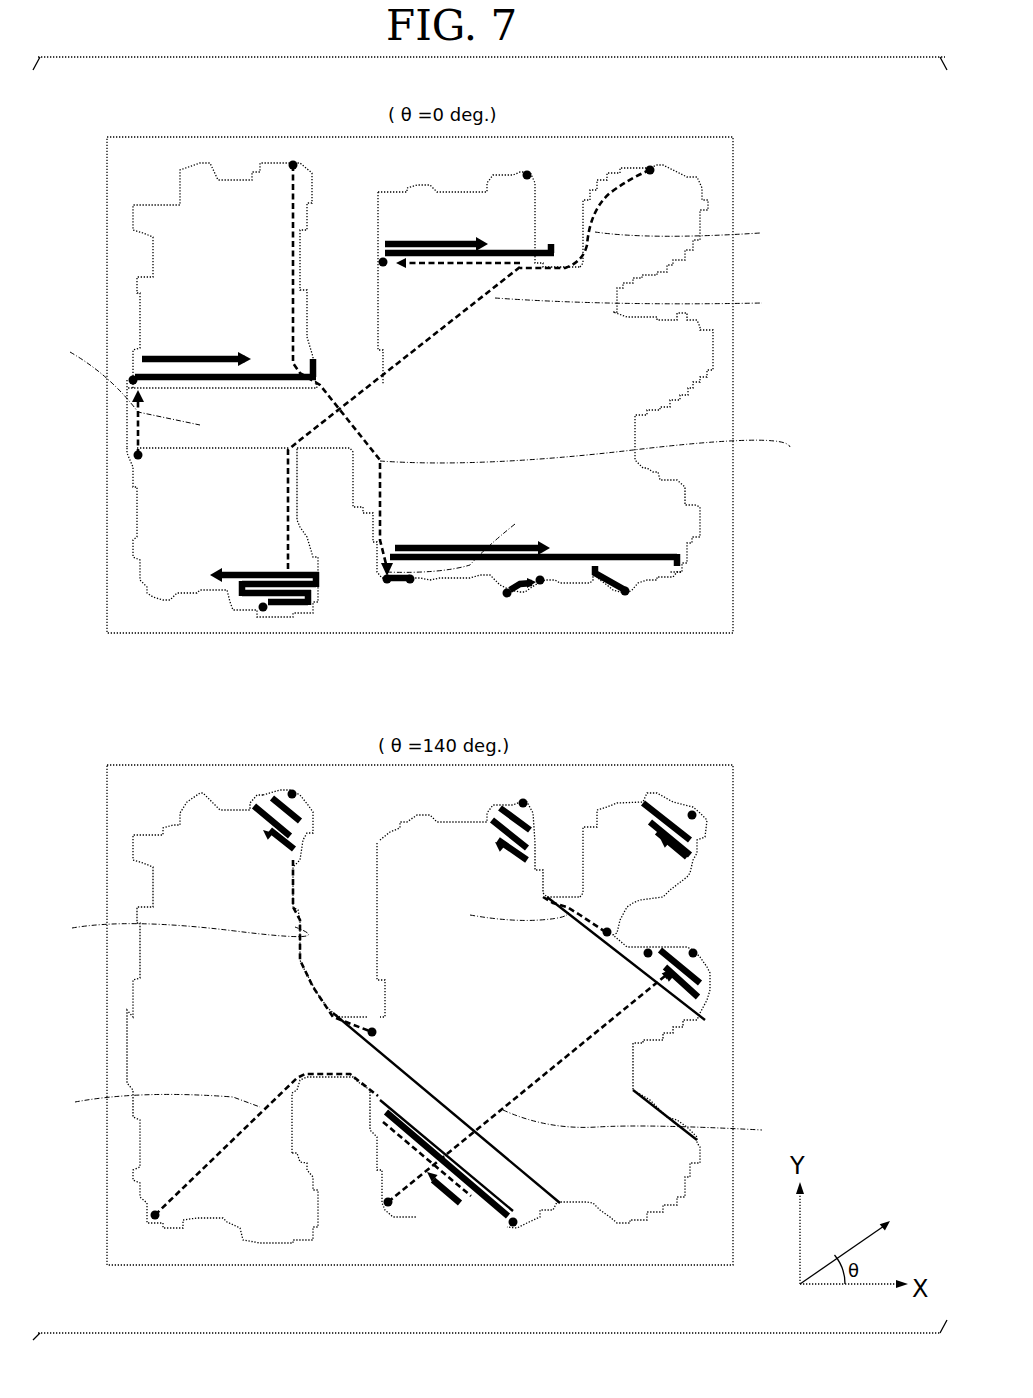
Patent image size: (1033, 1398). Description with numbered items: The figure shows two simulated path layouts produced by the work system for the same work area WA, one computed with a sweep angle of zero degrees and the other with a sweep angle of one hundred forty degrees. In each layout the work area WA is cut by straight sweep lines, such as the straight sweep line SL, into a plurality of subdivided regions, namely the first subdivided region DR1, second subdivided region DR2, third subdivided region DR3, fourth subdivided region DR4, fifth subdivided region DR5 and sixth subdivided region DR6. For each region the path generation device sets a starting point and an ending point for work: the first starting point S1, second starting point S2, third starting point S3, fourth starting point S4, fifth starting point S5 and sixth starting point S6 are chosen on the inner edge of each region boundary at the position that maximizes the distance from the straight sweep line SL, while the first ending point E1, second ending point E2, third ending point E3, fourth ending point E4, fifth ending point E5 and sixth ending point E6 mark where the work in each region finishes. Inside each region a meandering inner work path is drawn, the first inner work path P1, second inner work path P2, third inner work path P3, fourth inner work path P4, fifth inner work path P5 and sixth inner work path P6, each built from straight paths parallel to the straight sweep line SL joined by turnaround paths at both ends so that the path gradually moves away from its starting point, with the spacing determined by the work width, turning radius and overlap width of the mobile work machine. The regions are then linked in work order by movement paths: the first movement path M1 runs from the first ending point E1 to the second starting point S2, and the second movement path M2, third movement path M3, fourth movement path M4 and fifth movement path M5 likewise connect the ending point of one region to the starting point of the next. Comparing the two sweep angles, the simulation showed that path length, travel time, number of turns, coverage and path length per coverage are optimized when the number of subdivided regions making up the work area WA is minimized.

The work area WA is at (710, 185).
The first subdivided region DR1 is at (489, 646).
The second subdivided region DR2 is at (478, 594).
The third subdivided region DR3 is at (247, 845).
The fourth subdivided region DR4 is at (430, 1230).
The fifth subdivided region DR5 is at (405, 583).
The sixth subdivided region DR6 is at (530, 592).
The straight sweep line SL is at (420, 270).
The first movement path M1 is at (615, 574).
The second movement path M2 is at (418, 613).
The third movement path M3 is at (149, 719).
The fourth movement path M4 is at (604, 790).
The fifth movement path M5 is at (462, 533).
The first inner work path P1 is at (460, 546).
The second inner work path P2 is at (385, 250).
The third inner work path P3 is at (230, 575).
The fourth inner work path P4 is at (185, 358).
The fifth inner work path P5 is at (393, 575).
The sixth inner work path P6 is at (540, 580).
The first starting point S1 is at (628, 592).
The second starting point S2 is at (380, 258).
The third starting point S3 is at (262, 607).
The fourth starting point S4 is at (133, 378).
The fifth starting point S5 is at (386, 582).
The sixth starting point S6 is at (505, 596).
The first ending point E1 is at (653, 168).
The second ending point E2 is at (530, 172).
The third ending point E3 is at (136, 453).
The fourth ending point E4 is at (293, 163).
The fifth ending point E5 is at (411, 584).
The sixth ending point E6 is at (542, 584).